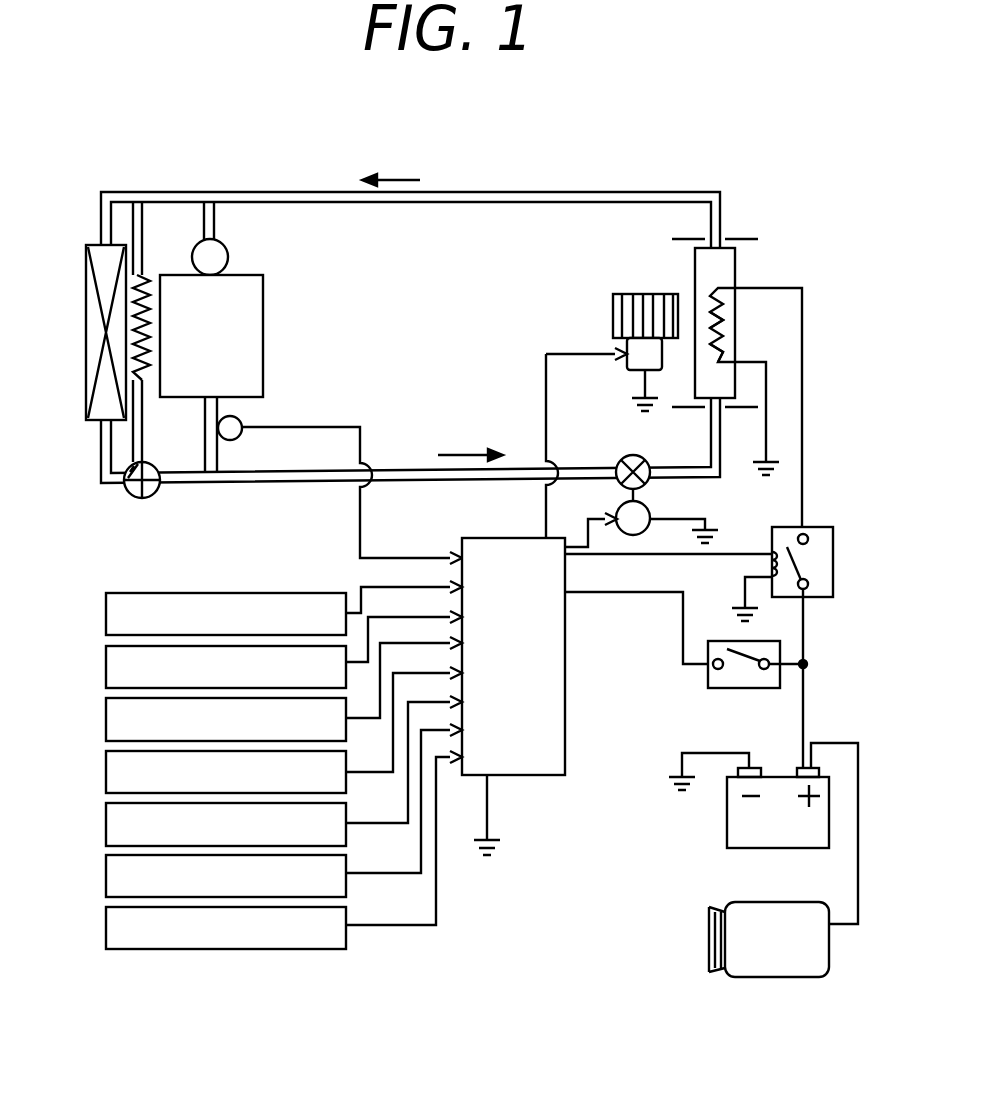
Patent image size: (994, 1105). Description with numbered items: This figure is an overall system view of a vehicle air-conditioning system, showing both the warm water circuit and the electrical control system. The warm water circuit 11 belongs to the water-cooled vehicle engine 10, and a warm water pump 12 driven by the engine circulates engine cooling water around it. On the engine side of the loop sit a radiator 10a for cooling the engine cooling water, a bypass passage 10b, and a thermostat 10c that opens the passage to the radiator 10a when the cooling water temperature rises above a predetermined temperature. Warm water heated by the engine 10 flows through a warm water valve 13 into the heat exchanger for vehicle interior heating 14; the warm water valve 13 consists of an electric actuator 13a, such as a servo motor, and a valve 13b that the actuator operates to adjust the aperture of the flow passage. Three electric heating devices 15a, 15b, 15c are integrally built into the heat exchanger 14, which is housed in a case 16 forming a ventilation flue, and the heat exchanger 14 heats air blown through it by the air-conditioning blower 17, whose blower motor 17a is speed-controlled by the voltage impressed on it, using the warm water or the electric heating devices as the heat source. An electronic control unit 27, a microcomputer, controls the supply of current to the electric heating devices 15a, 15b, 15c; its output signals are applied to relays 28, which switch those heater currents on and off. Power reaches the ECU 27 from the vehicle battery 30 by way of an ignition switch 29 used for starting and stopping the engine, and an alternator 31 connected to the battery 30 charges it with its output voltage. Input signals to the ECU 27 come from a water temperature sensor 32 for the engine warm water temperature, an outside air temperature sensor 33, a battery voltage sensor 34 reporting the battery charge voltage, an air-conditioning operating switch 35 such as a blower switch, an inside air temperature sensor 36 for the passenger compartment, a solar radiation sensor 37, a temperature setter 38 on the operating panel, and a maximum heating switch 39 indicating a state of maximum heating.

The vehicle engine 10 is at (263, 332).
The radiator 10a is at (95, 245).
The bypass passage 10b is at (142, 275).
The thermostat 10c is at (142, 498).
The warm water circuit 11 is at (305, 192).
The warm water pump 12 is at (228, 257).
The warm water valve 13 is at (640, 474).
The electric actuator 13a is at (618, 510).
The valve 13b is at (620, 460).
The heat exchanger for vehicle interior heating 14 is at (717, 268).
The electric heating device 15a is at (722, 318).
The electric heating device 15b is at (716, 320).
The electric heating device 15c is at (716, 353).
The case 16 is at (742, 238).
The air-conditioning blower 17 is at (640, 294).
The blower motor 17a is at (637, 363).
The electronic control unit (ECU) 27 is at (565, 670).
The relays 28 is at (833, 560).
The ignition switch 29 is at (748, 688).
The vehicle battery 30 is at (727, 822).
The alternator 31 is at (709, 940).
The water temperature sensor 32 is at (236, 440).
The outside air temperature sensor 33 is at (106, 615).
The battery voltage sensor 34 is at (106, 668).
The air-conditioning operating switch 35 is at (106, 721).
The inside air temperature sensor 36 is at (106, 773).
The solar radiation sensor 37 is at (106, 826).
The temperature setter 38 is at (106, 877).
The maximum heating switch 39 is at (106, 929).